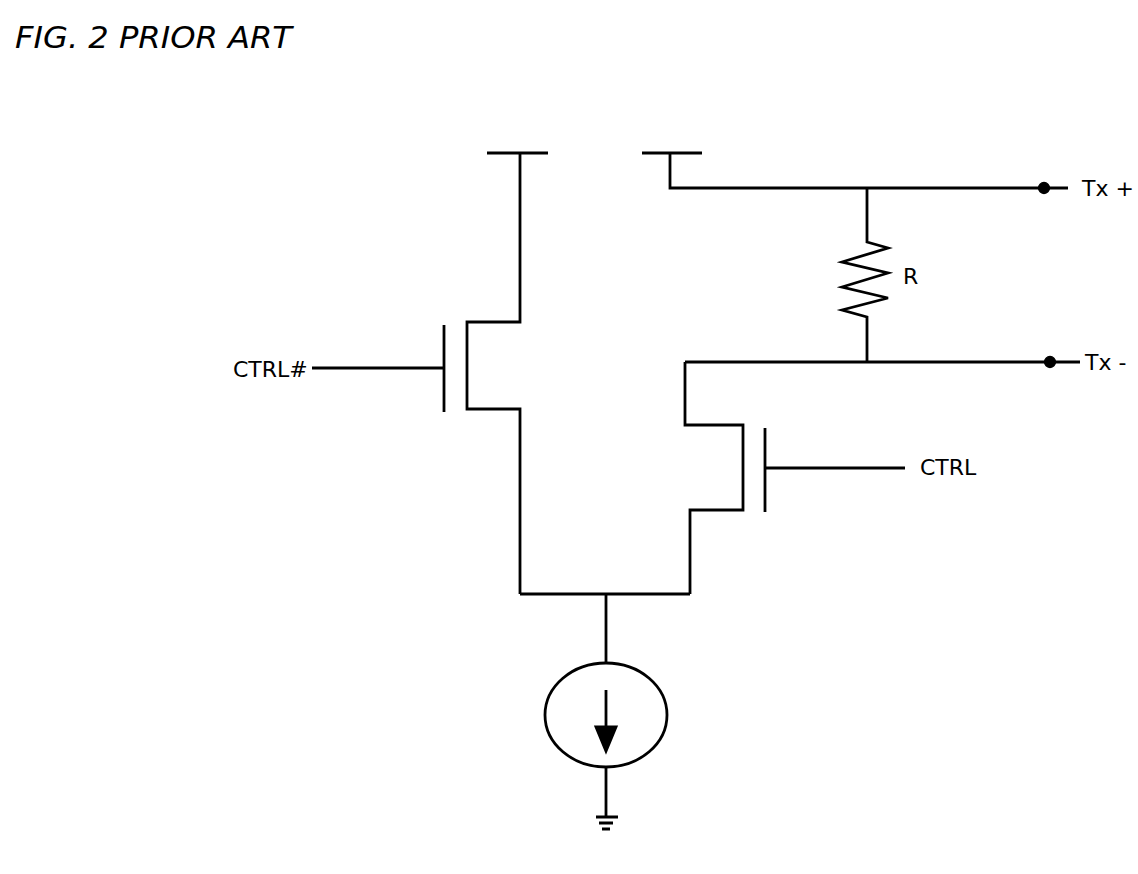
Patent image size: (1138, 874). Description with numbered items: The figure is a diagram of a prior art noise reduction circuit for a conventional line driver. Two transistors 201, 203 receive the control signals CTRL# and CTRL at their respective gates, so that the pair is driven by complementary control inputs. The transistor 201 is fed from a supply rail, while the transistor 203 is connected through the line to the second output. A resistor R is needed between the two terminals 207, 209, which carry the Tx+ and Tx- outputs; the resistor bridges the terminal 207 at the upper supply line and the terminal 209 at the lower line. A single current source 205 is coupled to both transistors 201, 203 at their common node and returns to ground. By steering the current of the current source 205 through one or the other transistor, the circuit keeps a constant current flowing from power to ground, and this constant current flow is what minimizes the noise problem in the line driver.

The transistor 201 is at (518, 385).
The transistor 203 is at (716, 464).
The current source 205 is at (540, 716).
The terminal 207 is at (1042, 186).
The terminal 209 is at (1052, 360).